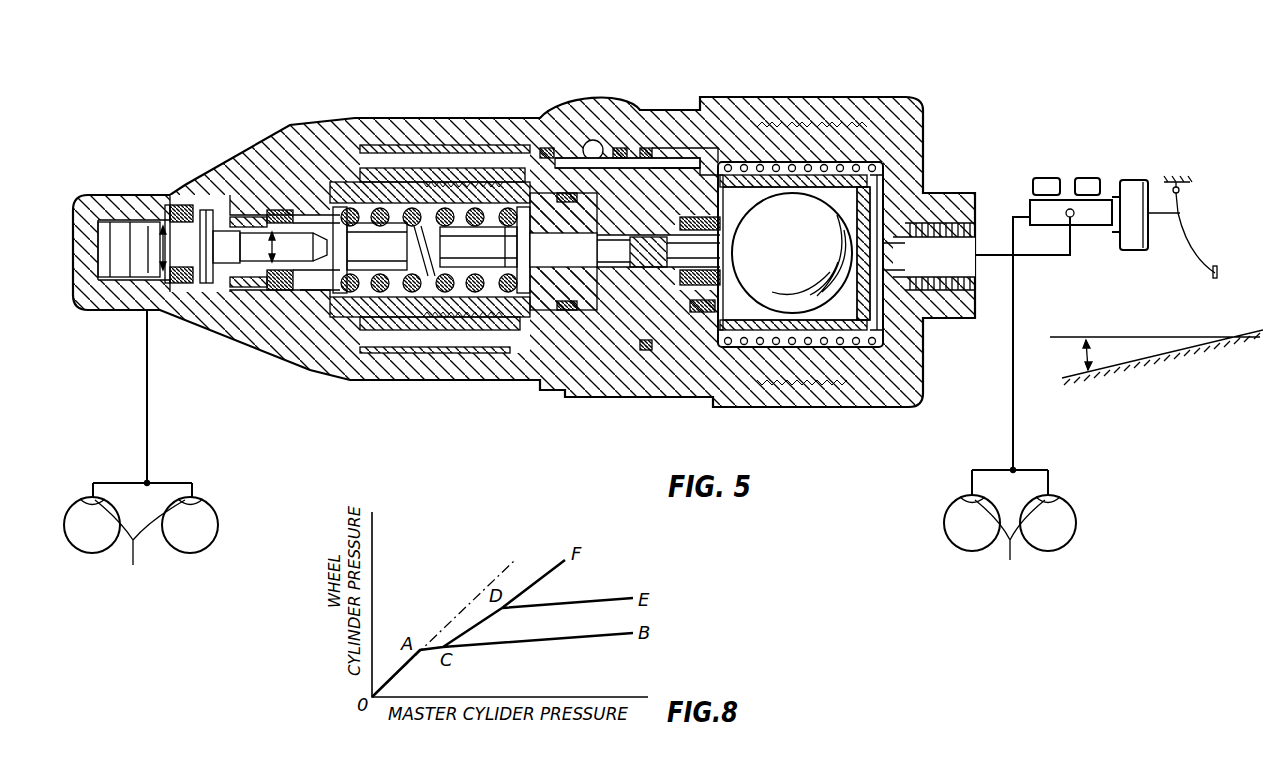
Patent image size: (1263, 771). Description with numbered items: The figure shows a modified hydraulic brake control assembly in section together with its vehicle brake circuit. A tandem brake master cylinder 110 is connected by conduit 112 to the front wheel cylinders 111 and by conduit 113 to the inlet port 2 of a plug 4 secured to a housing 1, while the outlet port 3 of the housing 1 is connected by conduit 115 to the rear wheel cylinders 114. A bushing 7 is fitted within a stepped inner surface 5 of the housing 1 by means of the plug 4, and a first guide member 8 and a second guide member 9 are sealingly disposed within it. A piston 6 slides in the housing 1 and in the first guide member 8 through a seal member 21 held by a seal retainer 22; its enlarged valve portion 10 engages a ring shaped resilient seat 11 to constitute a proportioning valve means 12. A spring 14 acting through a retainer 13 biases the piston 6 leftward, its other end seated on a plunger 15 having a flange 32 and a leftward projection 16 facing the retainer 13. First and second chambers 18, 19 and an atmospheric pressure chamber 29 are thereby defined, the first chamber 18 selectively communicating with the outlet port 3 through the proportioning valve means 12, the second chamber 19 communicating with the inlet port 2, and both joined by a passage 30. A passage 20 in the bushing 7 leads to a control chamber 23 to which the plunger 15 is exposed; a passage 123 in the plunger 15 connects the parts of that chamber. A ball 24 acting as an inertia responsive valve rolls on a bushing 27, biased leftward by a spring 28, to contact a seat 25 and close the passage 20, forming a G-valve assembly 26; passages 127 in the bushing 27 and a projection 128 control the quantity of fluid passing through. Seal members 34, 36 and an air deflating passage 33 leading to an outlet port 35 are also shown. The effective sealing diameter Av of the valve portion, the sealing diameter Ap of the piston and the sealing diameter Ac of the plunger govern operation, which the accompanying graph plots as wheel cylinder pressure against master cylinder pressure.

The housing 1 is at (828, 97).
The inlet port 2 is at (977, 226).
The outlet port 3 is at (133, 312).
The plug 4 is at (907, 117).
The stepped inner surface 5 is at (327, 330).
The piston 6 is at (207, 283).
The bushing 7 is at (608, 348).
The first guide member 8 is at (313, 313).
The second guide member 9 is at (563, 260).
The enlarged valve portion 10 is at (160, 228).
The ring shaped resilient seat 11 is at (183, 208).
The proportioning valve means 12 is at (176, 204).
The retainer 13 is at (362, 345).
The spring 14 is at (480, 300).
The plunger 15 is at (562, 352).
The leftward projection 16 is at (462, 256).
The first chamber 18 is at (262, 135).
The second chamber 19 is at (750, 190).
The passage 20 is at (704, 312).
The seal member 21 is at (277, 262).
The seal retainer 22 is at (236, 288).
The control chamber 23 is at (687, 240).
The ball 24 is at (802, 244).
The seat 25 is at (717, 222).
The G-valve assembly 26 is at (752, 345).
The bushing 27 is at (812, 345).
The spring 28 is at (850, 360).
The atmospheric pressure chamber 29 is at (440, 340).
The passage 30 is at (652, 165).
The flange 32 is at (522, 360).
The air deflating passage 33 is at (606, 142).
The seal member 34 is at (547, 145).
The outlet port 35 is at (593, 140).
The seal member 36 is at (620, 145).
The tandem brake master cylinder 110 is at (1104, 162).
The front wheel cylinders 111 is at (1010, 565).
The conduit 112 is at (1010, 386).
The conduit 113 is at (1033, 258).
The rear wheel cylinders 114 is at (133, 566).
The conduit 115 is at (147, 407).
The passage 123 is at (684, 362).
The passages 127 is at (866, 212).
The projection 128 is at (866, 182).
The effective sealing diameter of the enlarged valve portion Av is at (152, 270).
The sealing diameter of the piston Ap is at (262, 266).
The sealing diameter of the plunger Ac is at (660, 300).